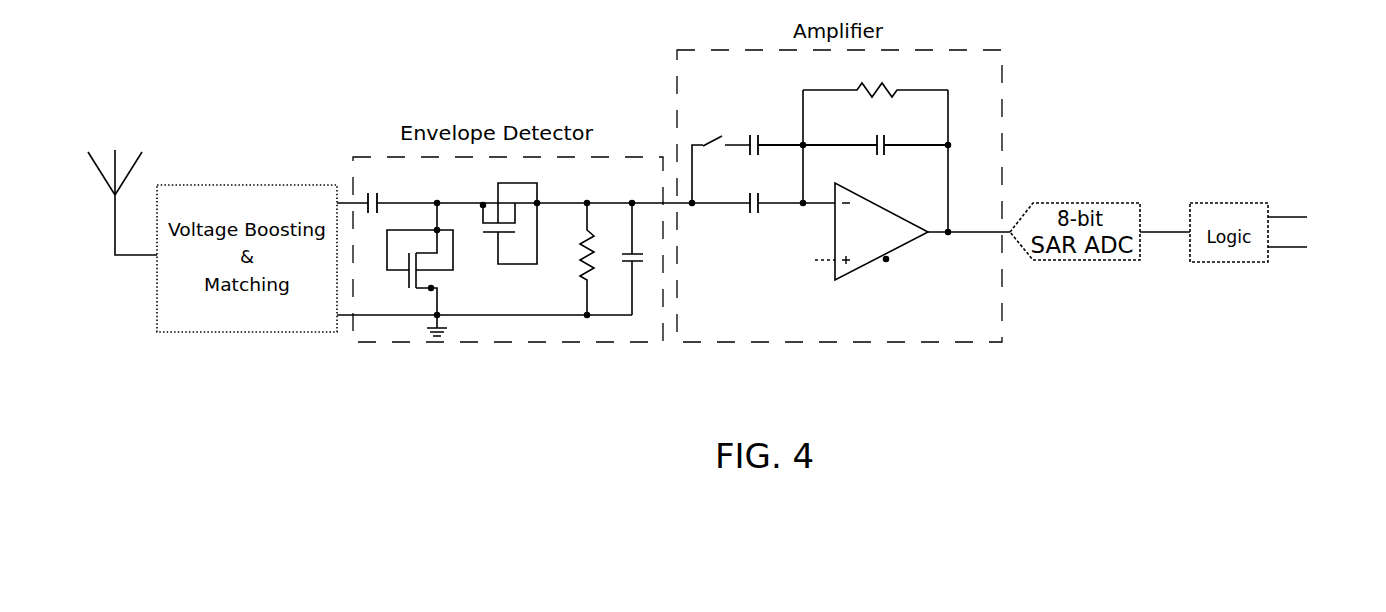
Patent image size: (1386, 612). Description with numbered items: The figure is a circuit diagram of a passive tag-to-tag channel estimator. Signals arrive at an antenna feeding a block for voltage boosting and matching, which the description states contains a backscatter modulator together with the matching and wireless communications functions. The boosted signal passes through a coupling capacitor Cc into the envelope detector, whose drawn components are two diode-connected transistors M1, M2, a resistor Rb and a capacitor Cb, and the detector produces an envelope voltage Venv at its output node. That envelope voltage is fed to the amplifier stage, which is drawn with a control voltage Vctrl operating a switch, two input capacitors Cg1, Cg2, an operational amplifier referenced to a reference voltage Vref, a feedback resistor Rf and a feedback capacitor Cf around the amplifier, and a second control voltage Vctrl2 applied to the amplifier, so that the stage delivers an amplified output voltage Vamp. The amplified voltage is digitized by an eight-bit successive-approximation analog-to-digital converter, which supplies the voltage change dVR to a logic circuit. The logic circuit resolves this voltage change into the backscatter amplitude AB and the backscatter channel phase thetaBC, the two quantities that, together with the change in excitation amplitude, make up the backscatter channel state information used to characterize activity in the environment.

The coupling capacitor Cc is at (368, 194).
The transistor M1 is at (427, 258).
The transistor M2 is at (506, 221).
The envelope voltage node Venv is at (586, 193).
The resistor Rb is at (597, 260).
The capacitor Cb is at (639, 257).
The control voltage (switch) Vctrl is at (710, 128).
The gain capacitor Cg1 is at (809, 133).
The gain capacitor Cg2 is at (774, 191).
The feedback resistor Rf is at (875, 77).
The feedback capacitor Cf is at (914, 135).
The reference voltage Vref is at (807, 264).
The control voltage (amplifier) Vctrl2 is at (886, 266).
The amplifier output voltage Vamp is at (968, 218).
The voltage change dVR is at (1165, 208).
The backscatter amplitude AB is at (1302, 218).
The backscatter channel phase thetaBC is at (1304, 248).